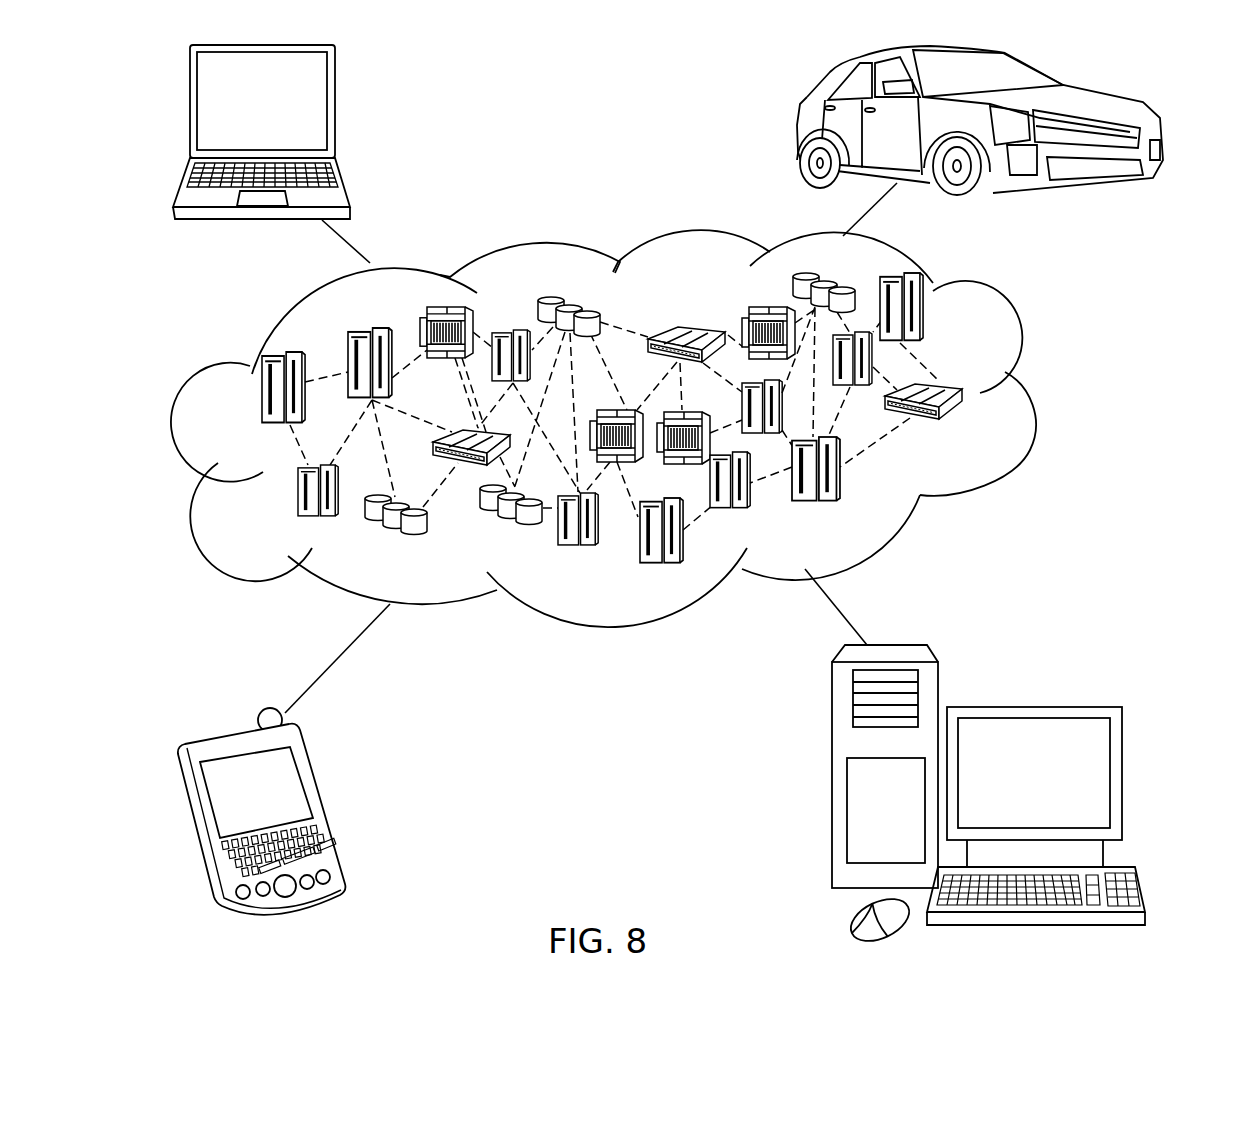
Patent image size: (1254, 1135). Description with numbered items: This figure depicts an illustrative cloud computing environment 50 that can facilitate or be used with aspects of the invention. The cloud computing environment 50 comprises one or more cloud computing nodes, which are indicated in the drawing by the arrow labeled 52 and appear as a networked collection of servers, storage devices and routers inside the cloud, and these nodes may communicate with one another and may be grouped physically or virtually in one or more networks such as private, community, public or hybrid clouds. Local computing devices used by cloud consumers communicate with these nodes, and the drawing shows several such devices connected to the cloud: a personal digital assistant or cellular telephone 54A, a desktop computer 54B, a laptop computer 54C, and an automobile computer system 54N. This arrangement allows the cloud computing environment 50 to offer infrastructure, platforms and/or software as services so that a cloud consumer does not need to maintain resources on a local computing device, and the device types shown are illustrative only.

The cloud computing environment 50 is at (1031, 402).
The cloud computing nodes 52 is at (969, 433).
The personal digital assistant (PDA) or cellular telephone 54A is at (327, 803).
The desktop computer 54B is at (1032, 707).
The laptop computer 54C is at (336, 110).
The automobile computer system 54N is at (800, 130).